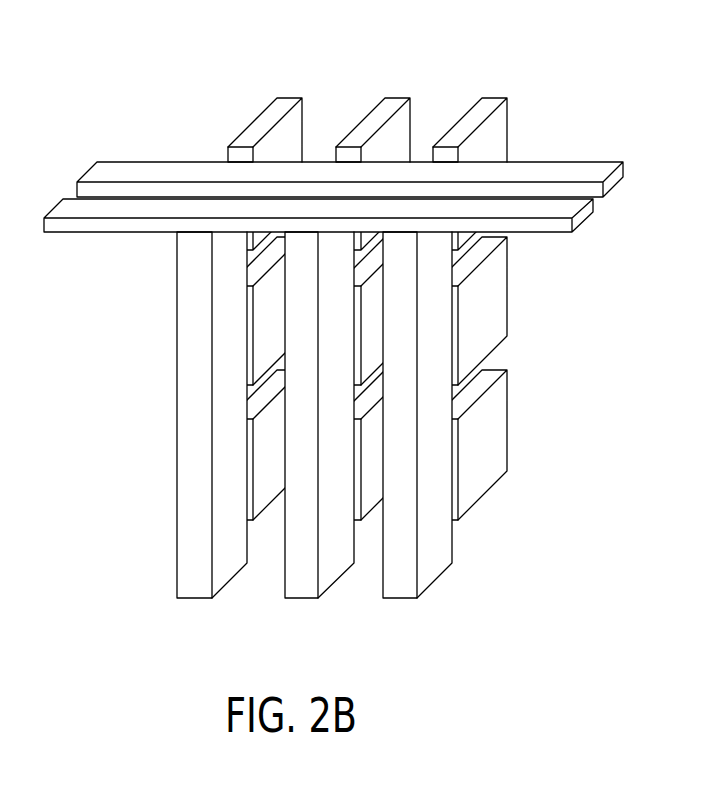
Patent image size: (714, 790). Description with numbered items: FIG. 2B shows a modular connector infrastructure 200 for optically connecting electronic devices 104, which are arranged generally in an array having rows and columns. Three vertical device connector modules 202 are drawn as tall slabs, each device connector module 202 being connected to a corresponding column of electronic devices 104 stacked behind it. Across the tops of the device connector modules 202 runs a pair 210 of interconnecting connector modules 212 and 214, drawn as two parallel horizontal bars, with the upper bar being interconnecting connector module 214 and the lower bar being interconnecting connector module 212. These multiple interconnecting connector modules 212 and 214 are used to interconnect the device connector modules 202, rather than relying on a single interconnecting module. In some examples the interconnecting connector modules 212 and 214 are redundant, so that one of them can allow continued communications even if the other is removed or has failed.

The electronic devices 104 is at (477, 110).
The memory cell structure 200 is at (518, 407).
The device connector modules 202 is at (399, 599).
The pair of interconnecting connector modules 210 is at (357, 169).
The interconnecting connector module 212 is at (60, 212).
The interconnecting connector module 214 is at (92, 172).